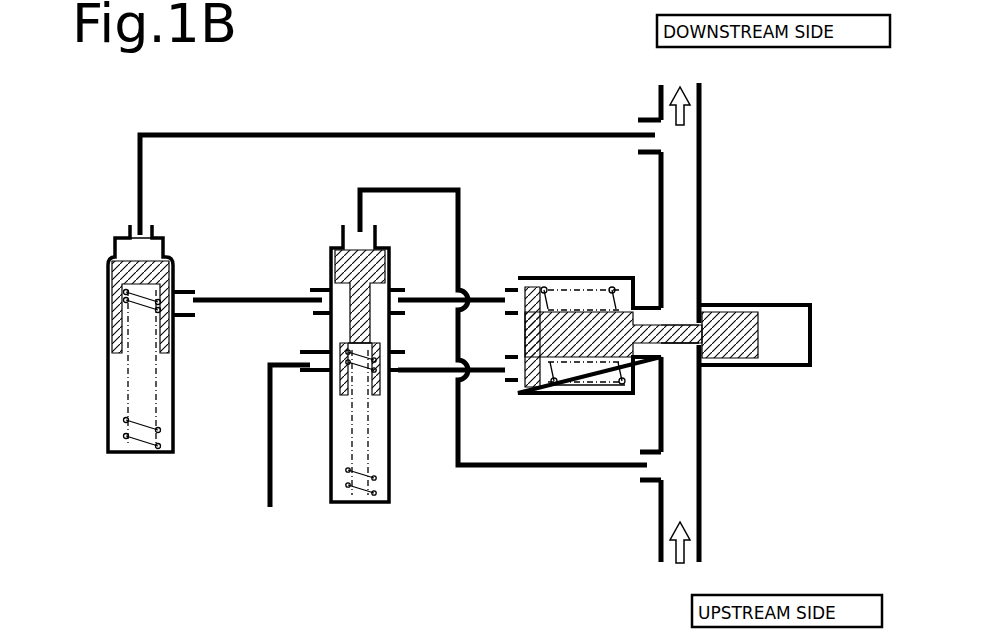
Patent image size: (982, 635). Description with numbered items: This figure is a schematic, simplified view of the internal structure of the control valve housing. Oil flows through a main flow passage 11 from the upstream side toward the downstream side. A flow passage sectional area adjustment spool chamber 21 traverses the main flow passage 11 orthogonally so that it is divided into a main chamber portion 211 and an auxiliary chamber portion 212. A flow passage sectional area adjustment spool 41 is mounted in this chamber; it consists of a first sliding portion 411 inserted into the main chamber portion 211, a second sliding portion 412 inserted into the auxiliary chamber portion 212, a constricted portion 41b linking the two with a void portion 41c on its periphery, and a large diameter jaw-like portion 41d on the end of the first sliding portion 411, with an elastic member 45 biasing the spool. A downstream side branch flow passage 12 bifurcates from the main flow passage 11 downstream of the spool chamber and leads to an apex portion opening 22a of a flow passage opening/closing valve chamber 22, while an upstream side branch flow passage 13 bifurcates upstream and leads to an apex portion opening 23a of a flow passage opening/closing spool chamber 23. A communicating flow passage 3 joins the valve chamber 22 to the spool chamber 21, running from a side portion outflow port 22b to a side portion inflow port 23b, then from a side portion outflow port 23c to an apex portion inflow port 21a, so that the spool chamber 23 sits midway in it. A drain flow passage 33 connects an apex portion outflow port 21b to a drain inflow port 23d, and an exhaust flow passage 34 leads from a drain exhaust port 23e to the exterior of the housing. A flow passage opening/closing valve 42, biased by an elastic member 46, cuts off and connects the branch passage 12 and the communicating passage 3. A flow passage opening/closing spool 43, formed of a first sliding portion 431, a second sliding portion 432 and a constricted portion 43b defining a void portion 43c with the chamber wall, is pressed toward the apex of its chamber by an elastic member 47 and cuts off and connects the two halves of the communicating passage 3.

The main flow passage 11 is at (678, 217).
The downstream side branch flow passage 12 is at (232, 134).
The upstream side branch flow passage 13 is at (355, 208).
The communicating flow passage 3 is at (354, 256).
The drain flow passage 33 is at (437, 372).
The exhaust flow passage 34 is at (268, 462).
The flow passage sectional area adjustment spool chamber 21 is at (548, 278).
The apex portion inflow port 21a is at (512, 298).
The apex portion outflow port 21b is at (512, 368).
The main chamber portion 211 is at (593, 368).
The auxiliary chamber portion 212 is at (792, 347).
The flow passage opening/closing valve chamber 22 is at (175, 390).
The apex portion opening 22a is at (140, 247).
The side portion outflow port 22b is at (182, 305).
The flow passage opening/closing spool chamber 23 is at (392, 472).
The apex portion opening 23a is at (365, 245).
The side portion inflow port 23b is at (318, 290).
The side portion outflow port 23c is at (393, 290).
The drain inflow port 23d is at (403, 355).
The drain exhaust port 23e is at (317, 367).
The flow passage sectional area adjustment spool 41 is at (583, 327).
The constricted portion 41b is at (678, 318).
The void portion 41c is at (682, 354).
The large diameter jaw-like portion 41d is at (535, 373).
The first sliding portion 411 is at (572, 383).
The second sliding portion 412 is at (732, 323).
The flow passage opening/closing valve 42 is at (162, 275).
The flow passage opening/closing spool 43 is at (343, 289).
The constricted portion 43b is at (337, 322).
The void portion 43c is at (322, 313).
The first sliding portion 431 is at (370, 262).
The second sliding portion 432 is at (380, 378).
The elastic member 45 is at (613, 290).
The elastic member 46 is at (137, 442).
The elastic member 47 is at (355, 493).